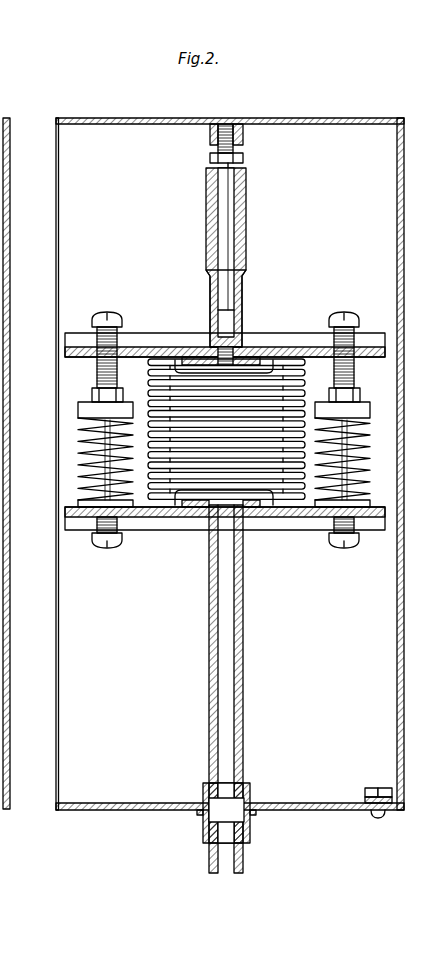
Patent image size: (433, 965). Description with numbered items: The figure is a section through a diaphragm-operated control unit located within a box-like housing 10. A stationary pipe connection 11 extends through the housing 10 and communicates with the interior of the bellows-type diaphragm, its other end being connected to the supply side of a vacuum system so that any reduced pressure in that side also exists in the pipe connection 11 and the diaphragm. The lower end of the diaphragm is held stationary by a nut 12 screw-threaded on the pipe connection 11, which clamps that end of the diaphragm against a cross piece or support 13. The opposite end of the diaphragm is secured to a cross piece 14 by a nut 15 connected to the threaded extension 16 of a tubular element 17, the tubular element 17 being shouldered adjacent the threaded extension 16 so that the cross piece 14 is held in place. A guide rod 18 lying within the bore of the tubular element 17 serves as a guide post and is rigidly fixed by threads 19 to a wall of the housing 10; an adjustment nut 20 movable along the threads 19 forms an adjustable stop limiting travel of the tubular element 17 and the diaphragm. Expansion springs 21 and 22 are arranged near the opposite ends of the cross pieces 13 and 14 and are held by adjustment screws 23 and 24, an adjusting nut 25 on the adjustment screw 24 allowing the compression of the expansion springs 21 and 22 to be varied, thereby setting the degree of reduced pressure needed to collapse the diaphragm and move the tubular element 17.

The housing 10 is at (272, 120).
The pipe connection 11 is at (157, 386).
The nut 12 is at (200, 518).
The cross piece or support 13 is at (281, 506).
The cross piece 14 is at (283, 340).
The nut 15 is at (244, 356).
The threaded extension 16 is at (203, 351).
The tubular element 17 is at (246, 252).
The guide rod 18 is at (230, 198).
The threads 19 is at (226, 128).
The adjustment nut 20 is at (209, 158).
The expansion spring 21 is at (78, 437).
The expansion spring 22 is at (353, 445).
The adjustment screw 23 is at (343, 554).
The adjustment screw 24 is at (345, 340).
The adjusting nut 25 is at (358, 383).